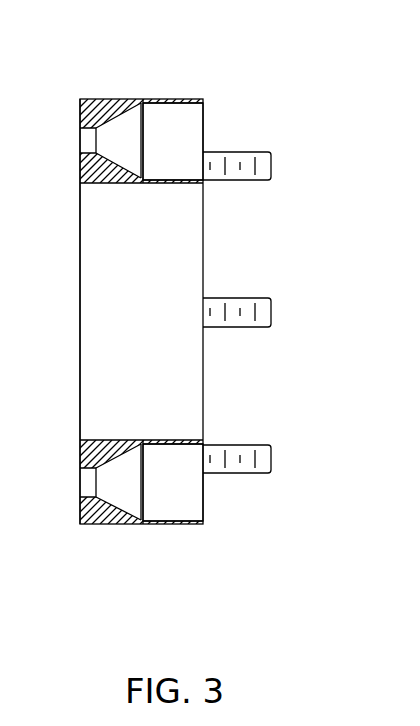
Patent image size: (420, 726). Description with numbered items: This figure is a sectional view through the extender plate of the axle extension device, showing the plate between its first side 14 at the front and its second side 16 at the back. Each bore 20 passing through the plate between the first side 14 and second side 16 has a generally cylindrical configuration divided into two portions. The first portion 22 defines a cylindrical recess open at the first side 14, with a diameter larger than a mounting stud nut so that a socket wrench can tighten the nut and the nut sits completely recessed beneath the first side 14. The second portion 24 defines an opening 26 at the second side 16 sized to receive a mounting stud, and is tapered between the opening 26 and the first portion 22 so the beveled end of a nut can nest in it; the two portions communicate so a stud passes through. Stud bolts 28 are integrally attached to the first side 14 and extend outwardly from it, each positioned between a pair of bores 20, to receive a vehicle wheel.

The first side 14 is at (203, 382).
The second side 16 is at (79, 314).
The bore 20 is at (205, 124).
The first portion 22 is at (173, 107).
The second portion 24 is at (121, 122).
The opening 26 is at (82, 482).
The stud bolts 28 is at (215, 181).